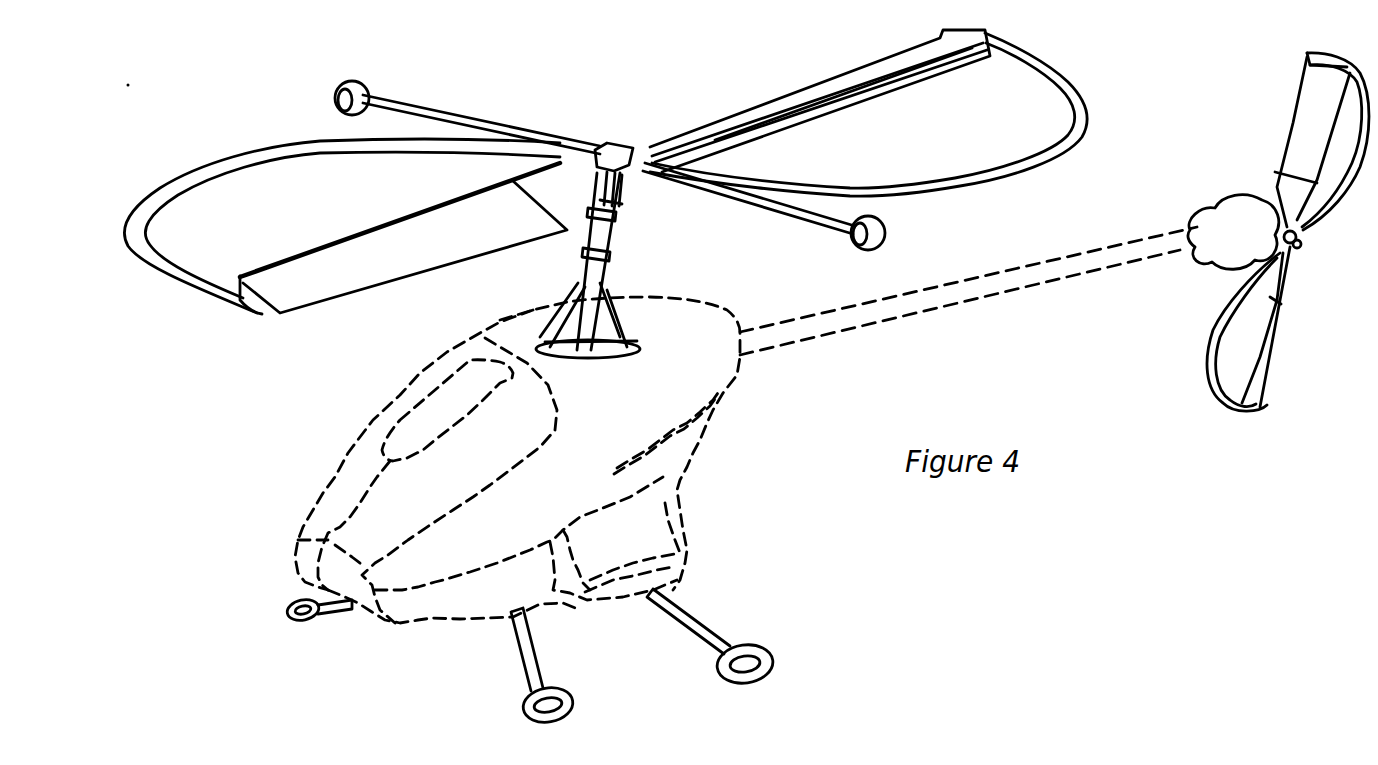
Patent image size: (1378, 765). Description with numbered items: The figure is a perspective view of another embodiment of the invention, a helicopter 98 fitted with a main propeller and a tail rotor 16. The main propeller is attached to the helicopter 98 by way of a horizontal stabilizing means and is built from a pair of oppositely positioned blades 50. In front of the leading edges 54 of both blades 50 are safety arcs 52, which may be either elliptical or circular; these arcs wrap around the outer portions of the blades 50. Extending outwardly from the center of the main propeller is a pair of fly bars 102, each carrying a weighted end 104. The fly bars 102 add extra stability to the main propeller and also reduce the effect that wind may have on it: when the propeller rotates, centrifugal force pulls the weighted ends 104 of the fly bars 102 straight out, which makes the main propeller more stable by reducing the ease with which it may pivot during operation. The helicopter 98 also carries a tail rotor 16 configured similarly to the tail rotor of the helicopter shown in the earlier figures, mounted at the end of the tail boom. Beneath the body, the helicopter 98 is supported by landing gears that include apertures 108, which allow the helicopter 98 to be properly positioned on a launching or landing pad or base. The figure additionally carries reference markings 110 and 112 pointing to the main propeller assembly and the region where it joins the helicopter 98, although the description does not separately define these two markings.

The tail rotor 16 is at (1292, 117).
The blades 50 is at (366, 270).
The safety arcs 52 is at (250, 148).
The leading edges 54 is at (370, 231).
The helicopter 98 is at (725, 460).
The fly bars 102 is at (433, 108).
The weighted ends 104 is at (355, 82).
The apertures 108 is at (317, 628).
The rotor assembly 110 is at (619, 99).
The rotor mast head 112 is at (660, 217).